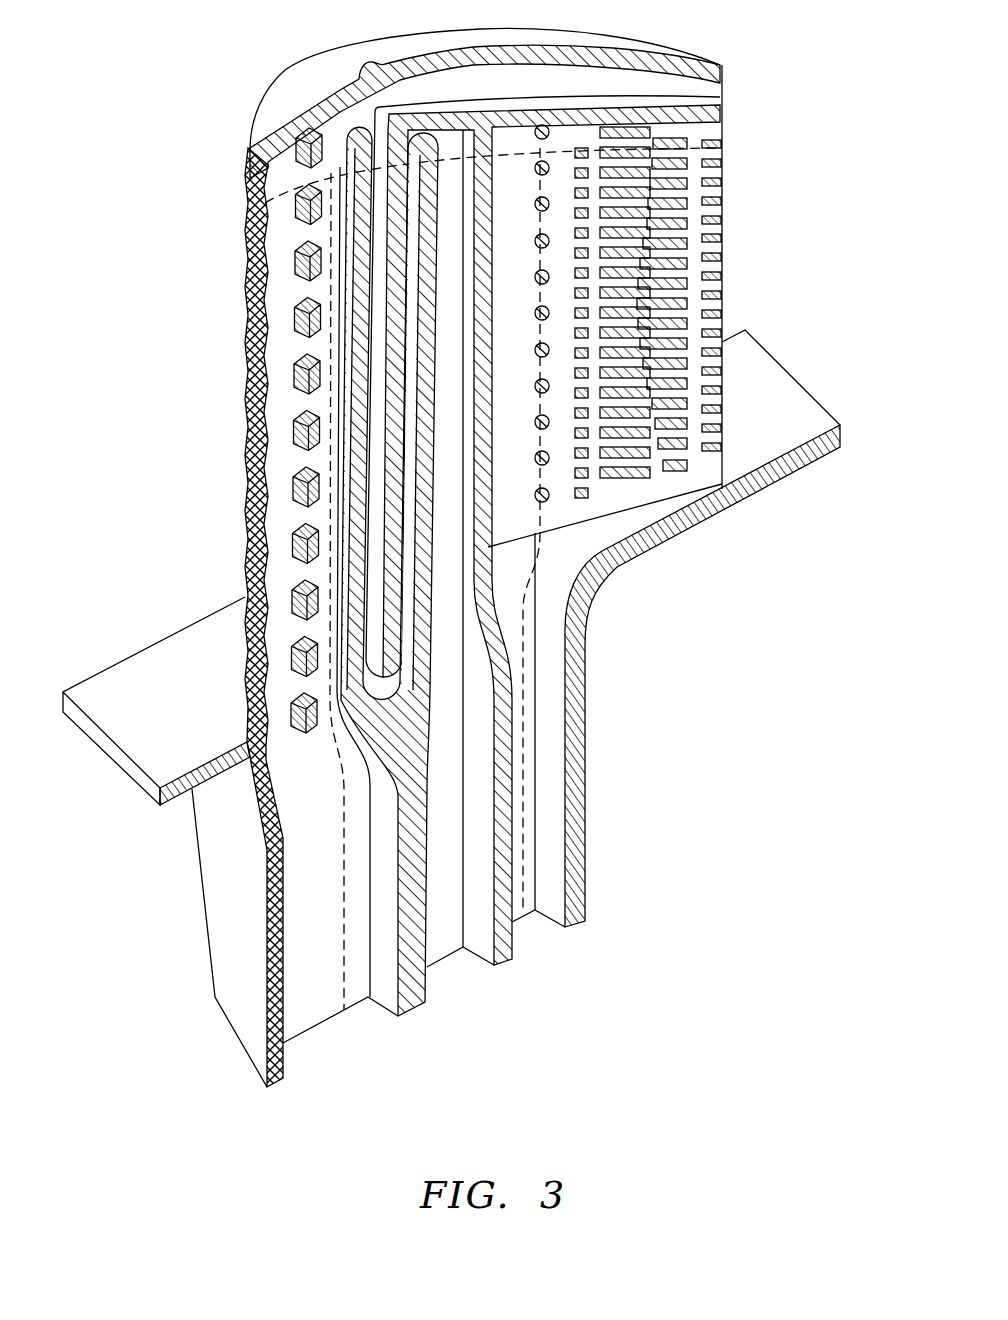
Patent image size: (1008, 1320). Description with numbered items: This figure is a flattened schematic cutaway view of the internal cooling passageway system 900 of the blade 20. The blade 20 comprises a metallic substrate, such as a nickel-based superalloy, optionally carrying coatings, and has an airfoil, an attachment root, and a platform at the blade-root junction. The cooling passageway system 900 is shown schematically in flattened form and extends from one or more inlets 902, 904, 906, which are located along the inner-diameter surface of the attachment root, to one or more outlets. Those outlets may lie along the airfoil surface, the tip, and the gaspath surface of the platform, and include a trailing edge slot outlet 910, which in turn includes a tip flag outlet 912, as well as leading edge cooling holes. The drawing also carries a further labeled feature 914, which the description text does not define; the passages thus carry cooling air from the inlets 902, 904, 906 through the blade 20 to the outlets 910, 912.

The blade 20 is at (180, 158).
The internal cooling passageway system 900 is at (462, 752).
The inlet 902 is at (338, 1028).
The inlet 904 is at (456, 974).
The inlet 906 is at (523, 941).
The trailing edge slot outlet 910 is at (740, 232).
The tip flag outlet 912 is at (740, 90).
The side wall 914 is at (243, 525).